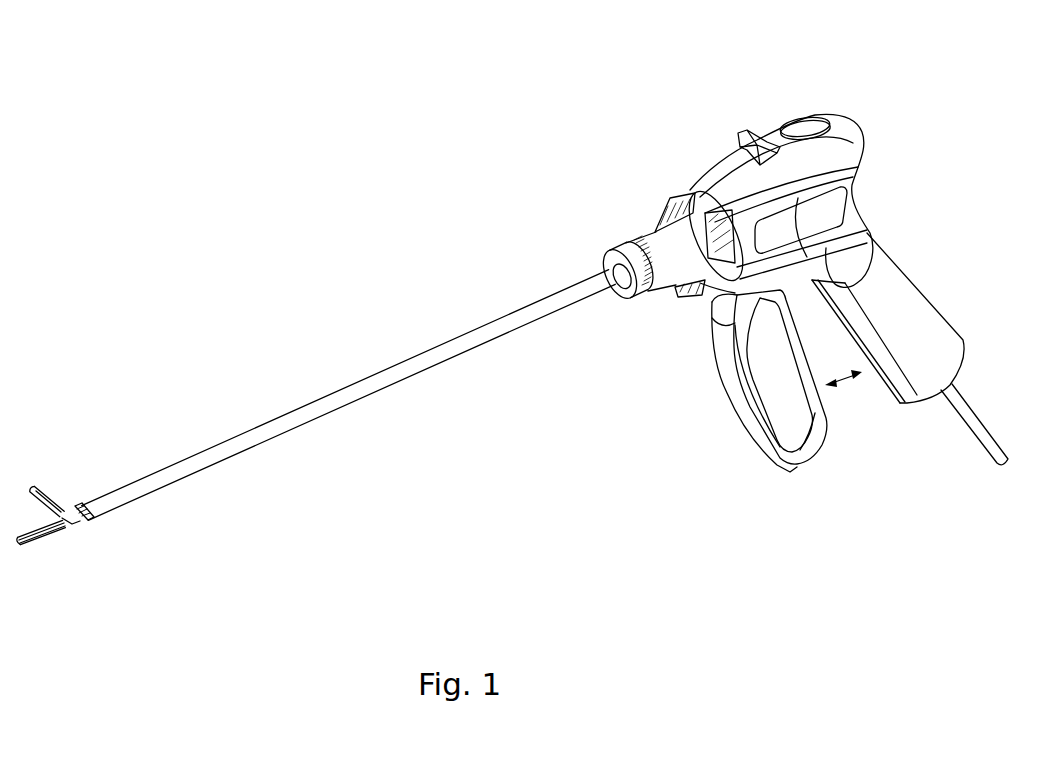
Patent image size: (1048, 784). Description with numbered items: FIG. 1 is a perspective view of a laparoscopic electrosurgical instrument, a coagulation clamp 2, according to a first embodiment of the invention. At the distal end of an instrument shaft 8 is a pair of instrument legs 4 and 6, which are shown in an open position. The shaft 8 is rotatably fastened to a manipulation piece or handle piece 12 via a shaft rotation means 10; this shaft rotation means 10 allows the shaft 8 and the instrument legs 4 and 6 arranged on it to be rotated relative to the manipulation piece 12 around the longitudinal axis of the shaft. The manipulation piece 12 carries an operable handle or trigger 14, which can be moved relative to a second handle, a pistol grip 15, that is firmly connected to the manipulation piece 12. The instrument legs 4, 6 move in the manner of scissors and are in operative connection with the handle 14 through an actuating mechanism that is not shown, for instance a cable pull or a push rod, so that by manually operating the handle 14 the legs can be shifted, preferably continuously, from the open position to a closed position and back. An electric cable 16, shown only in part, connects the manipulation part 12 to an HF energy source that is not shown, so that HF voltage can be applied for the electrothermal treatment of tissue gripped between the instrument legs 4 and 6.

The coagulation clamp 2 is at (357, 83).
The instrument leg 4 is at (55, 505).
The instrument leg 6 is at (47, 545).
The shaft 8 is at (337, 405).
The shaft rotation means 10 is at (657, 243).
The manipulation piece 12 is at (851, 102).
The handle 14 is at (750, 425).
The second handle 15 is at (903, 300).
The electric cable 16 is at (978, 432).